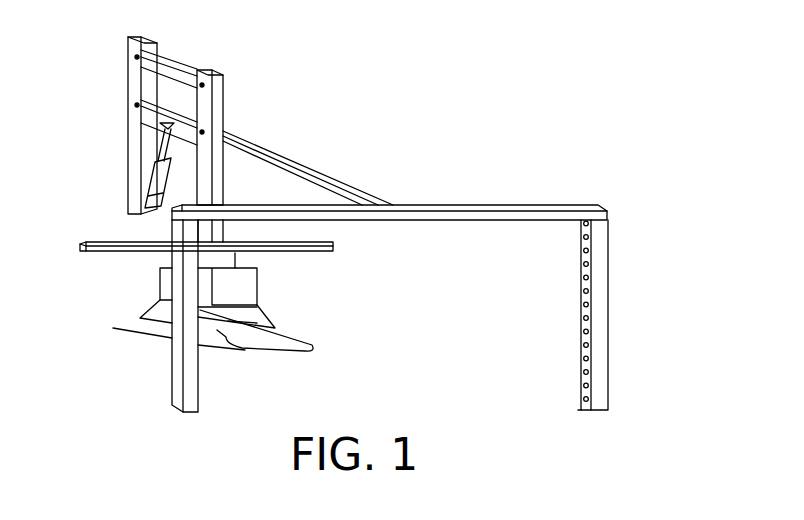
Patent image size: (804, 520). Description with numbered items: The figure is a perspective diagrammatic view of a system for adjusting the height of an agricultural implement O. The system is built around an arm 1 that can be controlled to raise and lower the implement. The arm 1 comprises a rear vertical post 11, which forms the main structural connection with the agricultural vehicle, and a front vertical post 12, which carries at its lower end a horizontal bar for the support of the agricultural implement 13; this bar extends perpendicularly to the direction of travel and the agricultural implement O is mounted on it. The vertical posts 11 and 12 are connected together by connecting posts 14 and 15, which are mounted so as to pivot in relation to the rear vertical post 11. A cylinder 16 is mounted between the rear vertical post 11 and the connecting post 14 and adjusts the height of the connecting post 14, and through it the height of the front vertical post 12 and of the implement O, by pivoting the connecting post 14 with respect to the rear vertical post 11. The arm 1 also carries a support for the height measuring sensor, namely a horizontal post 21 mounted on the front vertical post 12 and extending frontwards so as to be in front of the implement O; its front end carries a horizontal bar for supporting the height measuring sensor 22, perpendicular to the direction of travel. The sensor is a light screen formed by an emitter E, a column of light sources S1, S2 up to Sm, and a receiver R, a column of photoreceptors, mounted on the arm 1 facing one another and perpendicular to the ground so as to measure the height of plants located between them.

The arm 1 is at (326, 59).
The rear vertical post 11 is at (130, 138).
The front vertical post 12 is at (215, 93).
The horizontal bar for the support of the agricultural implement 13 is at (110, 252).
The connecting post 14 is at (146, 107).
The connecting post 15 is at (147, 63).
The cylinder 16 is at (151, 172).
The horizontal post 21 is at (302, 170).
The horizontal bar for supporting the height measuring sensor 22 is at (505, 207).
The receiver R is at (178, 385).
The agricultural implement O is at (243, 287).
The emitter E is at (603, 322).
The light source Sm is at (580, 223).
The light source S2 is at (583, 386).
The light source S1 is at (581, 411).